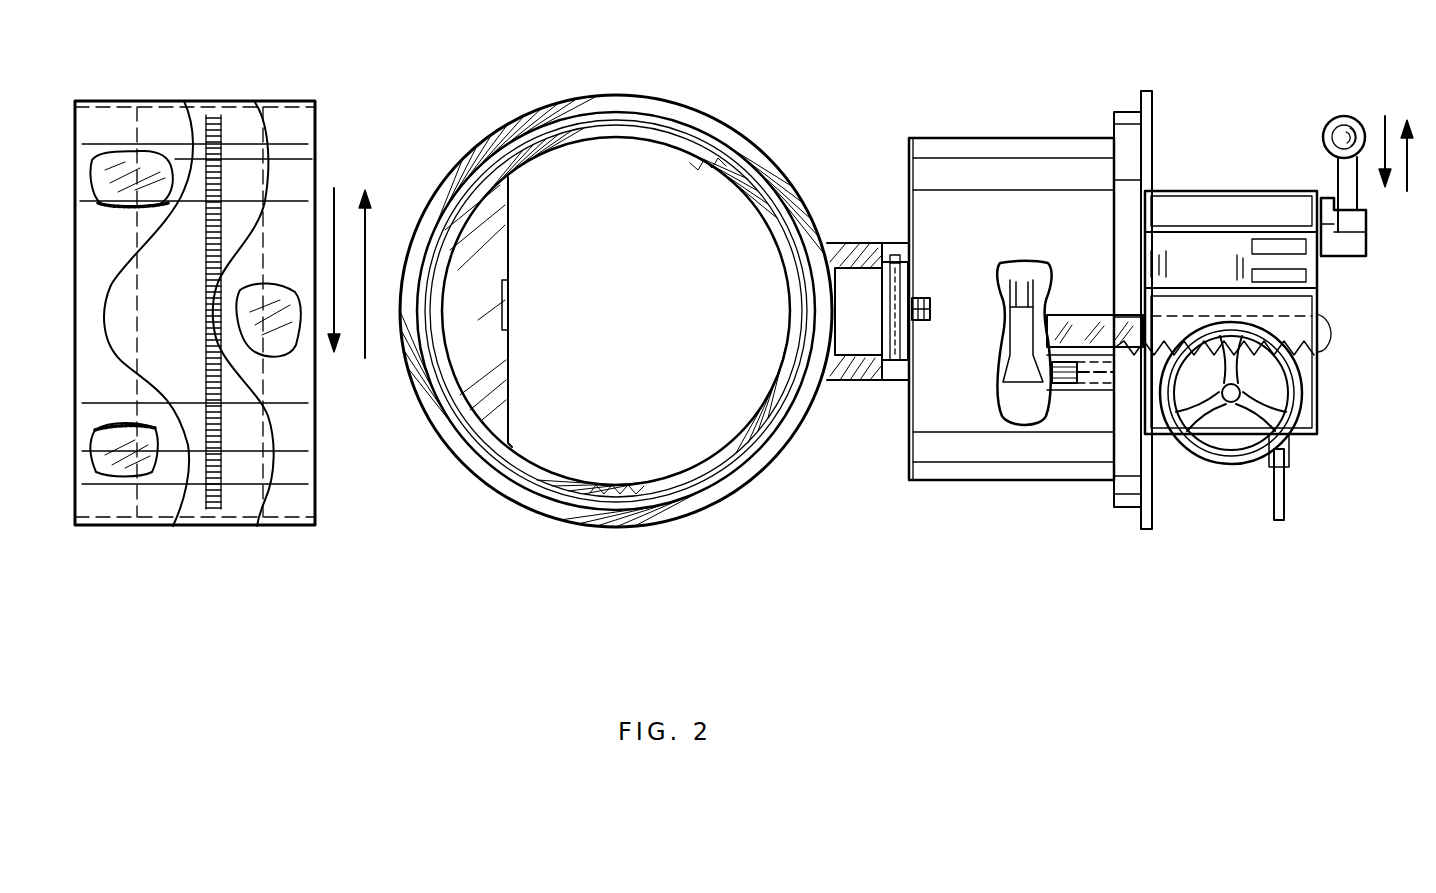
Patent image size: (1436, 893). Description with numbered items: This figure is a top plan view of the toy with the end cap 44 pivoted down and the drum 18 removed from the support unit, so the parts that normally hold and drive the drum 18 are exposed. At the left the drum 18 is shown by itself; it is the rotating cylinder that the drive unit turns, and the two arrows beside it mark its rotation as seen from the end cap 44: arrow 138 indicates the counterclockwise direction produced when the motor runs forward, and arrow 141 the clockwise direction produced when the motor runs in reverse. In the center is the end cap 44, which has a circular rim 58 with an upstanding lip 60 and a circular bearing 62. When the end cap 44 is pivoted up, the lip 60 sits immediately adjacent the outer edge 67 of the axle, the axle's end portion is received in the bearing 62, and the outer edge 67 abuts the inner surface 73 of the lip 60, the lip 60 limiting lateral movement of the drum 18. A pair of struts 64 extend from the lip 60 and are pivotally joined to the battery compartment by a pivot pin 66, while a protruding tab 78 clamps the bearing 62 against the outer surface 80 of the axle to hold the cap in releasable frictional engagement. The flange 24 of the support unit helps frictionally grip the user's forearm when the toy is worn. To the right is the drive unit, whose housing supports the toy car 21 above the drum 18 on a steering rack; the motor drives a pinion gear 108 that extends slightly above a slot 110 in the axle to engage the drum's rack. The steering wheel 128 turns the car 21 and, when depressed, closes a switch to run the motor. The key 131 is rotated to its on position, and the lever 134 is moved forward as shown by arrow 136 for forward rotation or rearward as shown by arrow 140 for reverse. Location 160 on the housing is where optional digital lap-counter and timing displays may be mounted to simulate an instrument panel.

The drum 18 is at (321, 478).
The arrow 138 is at (368, 170).
The arrow 141 is at (334, 318).
The end cap 44 is at (616, 345).
The flange 24 is at (493, 262).
The circular bearing 62 is at (570, 493).
The inner surface 73 is at (532, 503).
The upstanding lip 60 is at (573, 520).
The circular rim 58 is at (698, 516).
The struts 64 is at (878, 245).
The pivot pin 66 is at (900, 283).
The protruding tab 78 is at (932, 308).
The toy car 21 is at (1017, 259).
The outer surface 80 is at (1030, 306).
The outer edge 67 is at (924, 182).
The pinion gear 108 is at (1064, 383).
The slot 110 is at (1092, 390).
The steering wheel 128 is at (1230, 456).
The key 131 is at (1286, 481).
The lever 134 is at (1338, 180).
The arrow 136 is at (1385, 112).
The arrow 140 is at (1409, 191).
The location for digital displays 160 is at (1304, 262).